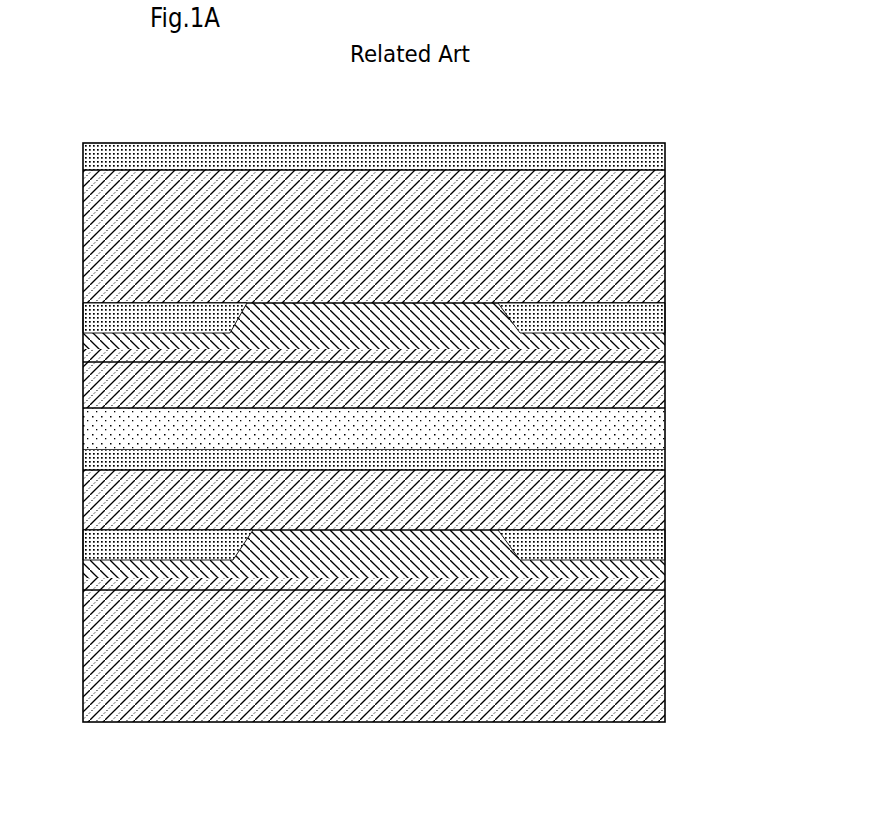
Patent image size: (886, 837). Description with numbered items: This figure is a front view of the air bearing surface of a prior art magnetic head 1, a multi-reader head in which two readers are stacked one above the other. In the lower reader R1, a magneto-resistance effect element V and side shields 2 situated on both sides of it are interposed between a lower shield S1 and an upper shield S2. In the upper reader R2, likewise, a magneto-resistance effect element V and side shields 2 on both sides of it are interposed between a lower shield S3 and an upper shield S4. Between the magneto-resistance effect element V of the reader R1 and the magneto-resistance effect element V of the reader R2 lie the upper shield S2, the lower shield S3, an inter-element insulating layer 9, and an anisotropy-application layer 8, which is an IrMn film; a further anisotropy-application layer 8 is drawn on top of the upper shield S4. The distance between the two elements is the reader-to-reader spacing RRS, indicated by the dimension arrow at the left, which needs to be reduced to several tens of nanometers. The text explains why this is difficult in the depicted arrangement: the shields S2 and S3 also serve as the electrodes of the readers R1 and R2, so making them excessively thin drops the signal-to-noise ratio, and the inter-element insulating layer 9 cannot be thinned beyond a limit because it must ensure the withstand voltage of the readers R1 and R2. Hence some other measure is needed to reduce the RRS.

The prior art magnetic head 1 is at (420, 393).
The magneto-resistance effect element V is at (414, 330).
The anisotropy-application layer 8 is at (665, 147).
The inter-element insulating layer 9 is at (665, 428).
The side shields 2 is at (665, 352).
The lower shield S1 is at (665, 645).
The upper shield S2 is at (665, 508).
The lower shield S3 is at (665, 393).
The upper shield S4 is at (665, 186).
The reader R1 is at (678, 549).
The reader R2 is at (678, 322).
The reader-to-reader spacing RRS is at (83, 547).